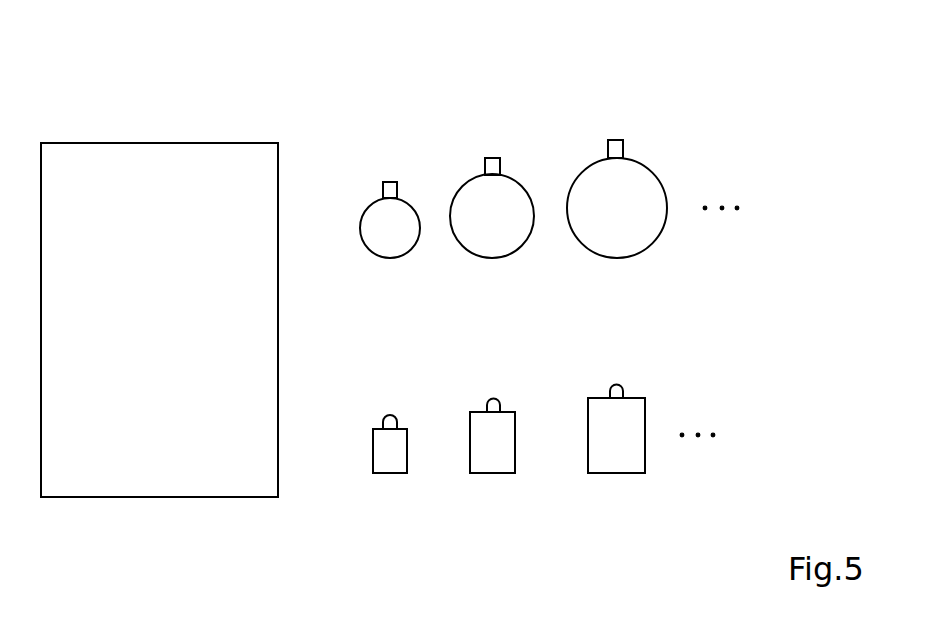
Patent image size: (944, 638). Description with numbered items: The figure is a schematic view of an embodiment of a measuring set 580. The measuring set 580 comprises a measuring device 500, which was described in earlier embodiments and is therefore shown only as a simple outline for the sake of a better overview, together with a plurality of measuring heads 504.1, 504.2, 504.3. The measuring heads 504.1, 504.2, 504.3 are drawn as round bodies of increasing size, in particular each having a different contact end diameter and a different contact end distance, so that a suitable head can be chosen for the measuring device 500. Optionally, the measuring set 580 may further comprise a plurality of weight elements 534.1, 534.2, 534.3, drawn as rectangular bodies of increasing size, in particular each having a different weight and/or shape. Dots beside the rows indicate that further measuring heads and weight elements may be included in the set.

The measuring device 500 is at (248, 473).
The measuring set 580 is at (695, 86).
The measuring head 504.1 is at (388, 243).
The measuring head 504.2 is at (500, 245).
The measuring head 504.3 is at (620, 243).
The weight element 534.1 is at (388, 458).
The weight element 534.2 is at (497, 458).
The weight element 534.3 is at (623, 457).